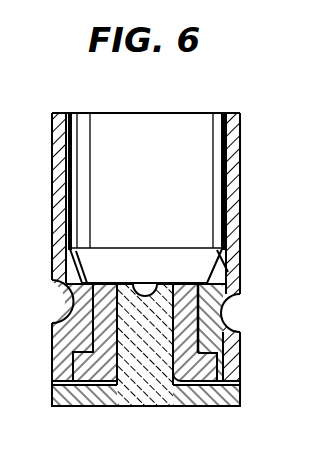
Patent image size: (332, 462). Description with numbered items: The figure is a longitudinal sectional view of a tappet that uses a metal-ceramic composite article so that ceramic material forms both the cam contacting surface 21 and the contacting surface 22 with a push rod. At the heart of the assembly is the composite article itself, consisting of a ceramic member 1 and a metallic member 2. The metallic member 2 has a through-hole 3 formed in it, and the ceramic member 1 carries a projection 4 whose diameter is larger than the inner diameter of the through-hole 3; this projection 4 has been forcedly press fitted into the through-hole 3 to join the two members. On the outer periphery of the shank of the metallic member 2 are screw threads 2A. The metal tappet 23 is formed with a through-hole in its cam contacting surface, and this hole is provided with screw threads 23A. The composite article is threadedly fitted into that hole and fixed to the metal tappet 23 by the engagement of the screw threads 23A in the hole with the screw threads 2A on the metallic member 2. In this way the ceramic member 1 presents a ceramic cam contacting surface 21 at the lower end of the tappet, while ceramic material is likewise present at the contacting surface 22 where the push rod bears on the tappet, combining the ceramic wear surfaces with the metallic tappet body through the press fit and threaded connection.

The ceramic member 1 is at (131, 396).
The metallic member 2 is at (203, 407).
The screw threads 2A is at (217, 353).
The through-hole 3 is at (164, 394).
The projection 4 is at (200, 328).
The cam contacting surface 21 is at (83, 408).
The contacting surface with a push rod 22 is at (187, 277).
The metal tappet 23 is at (217, 134).
The screw threads 23A is at (227, 306).